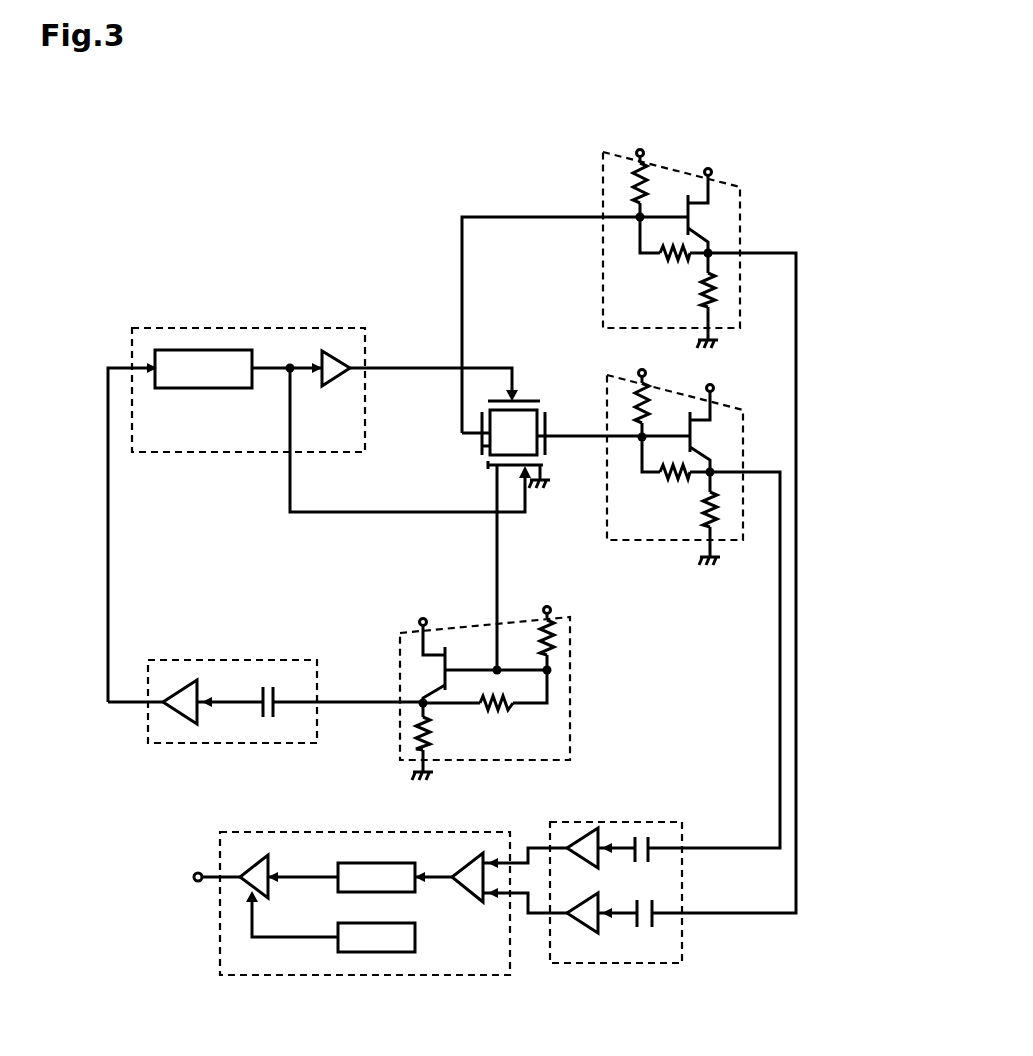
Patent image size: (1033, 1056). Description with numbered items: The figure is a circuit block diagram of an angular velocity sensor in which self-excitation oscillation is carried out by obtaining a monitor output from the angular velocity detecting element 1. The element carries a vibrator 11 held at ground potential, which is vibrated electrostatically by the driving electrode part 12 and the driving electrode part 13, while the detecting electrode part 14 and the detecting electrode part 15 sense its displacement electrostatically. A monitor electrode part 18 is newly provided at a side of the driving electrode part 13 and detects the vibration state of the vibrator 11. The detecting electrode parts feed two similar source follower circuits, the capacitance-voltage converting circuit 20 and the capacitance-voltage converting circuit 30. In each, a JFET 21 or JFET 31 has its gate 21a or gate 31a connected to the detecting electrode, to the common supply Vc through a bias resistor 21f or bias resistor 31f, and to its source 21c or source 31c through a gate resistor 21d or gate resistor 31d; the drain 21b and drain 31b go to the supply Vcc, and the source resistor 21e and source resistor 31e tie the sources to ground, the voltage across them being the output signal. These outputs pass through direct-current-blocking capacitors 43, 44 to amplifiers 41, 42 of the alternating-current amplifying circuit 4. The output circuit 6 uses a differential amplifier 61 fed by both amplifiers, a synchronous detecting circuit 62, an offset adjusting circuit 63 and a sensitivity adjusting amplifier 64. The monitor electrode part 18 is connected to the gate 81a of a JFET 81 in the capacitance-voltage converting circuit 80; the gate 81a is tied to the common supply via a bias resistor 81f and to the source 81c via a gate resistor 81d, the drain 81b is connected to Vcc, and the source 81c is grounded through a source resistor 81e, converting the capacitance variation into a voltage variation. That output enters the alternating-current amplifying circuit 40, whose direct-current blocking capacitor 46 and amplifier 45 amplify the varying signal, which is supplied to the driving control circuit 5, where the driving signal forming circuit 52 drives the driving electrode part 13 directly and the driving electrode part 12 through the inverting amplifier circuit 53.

The angular velocity detecting element 1 is at (484, 394).
The alternating-current amplifying circuit 4 is at (627, 963).
The driving control circuit 5 is at (148, 325).
The output circuit 6 is at (290, 977).
The vibrator 11 is at (484, 430).
The driving electrode part 12 is at (528, 398).
The driving electrode part 13 is at (510, 465).
The detecting electrode part 14 is at (480, 447).
The detecting electrode part 15 is at (548, 438).
The monitor electrode part 18 is at (493, 468).
The capacitance-voltage converting circuit 20 is at (740, 187).
The JFET 21 is at (715, 220).
The gate 21a is at (650, 235).
The drain 21b is at (710, 198).
The source 21c is at (712, 250).
The gate resistor 21d is at (665, 260).
The source resistor 21e is at (720, 298).
The bias resistor 21f is at (632, 195).
The capacitance-voltage converting circuit 30 is at (737, 545).
The JFET 31 is at (715, 436).
The gate 31a is at (645, 462).
The drain 31b is at (745, 413).
The source 31c is at (712, 462).
The gate resistor 31d is at (675, 483).
The source resistor 31e is at (720, 510).
The bias resistor 31f is at (635, 410).
The alternating-current amplifying circuit 40 is at (197, 660).
The amplifier 41 is at (572, 845).
The amplifier 42 is at (583, 930).
The direct-current-blocking capacitor 43 is at (643, 835).
The direct-current-blocking capacitor 44 is at (643, 933).
The amplifier 45 is at (178, 705).
The direct-current blocking capacitor 46 is at (268, 682).
The driving signal forming circuit 52 is at (190, 382).
The inverting amplifier circuit 53 is at (342, 352).
The differential amplifier 61 is at (470, 890).
The synchronous detecting circuit 62 is at (360, 863).
The offset adjusting circuit 63 is at (385, 947).
The sensitivity adjusting amplifier 64 is at (252, 860).
The capacitance-voltage converting circuit 80 is at (572, 683).
The JFET 81 is at (433, 668).
The gate 81a is at (493, 665).
The drain 81b is at (418, 645).
The source 81c is at (432, 690).
The gate resistor 81d is at (508, 722).
The source resistor 81e is at (408, 735).
The bias resistor 81f is at (560, 636).